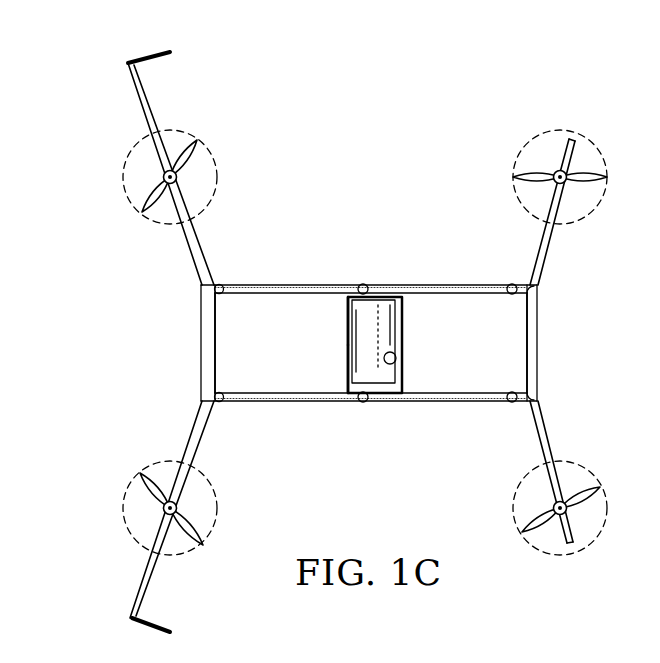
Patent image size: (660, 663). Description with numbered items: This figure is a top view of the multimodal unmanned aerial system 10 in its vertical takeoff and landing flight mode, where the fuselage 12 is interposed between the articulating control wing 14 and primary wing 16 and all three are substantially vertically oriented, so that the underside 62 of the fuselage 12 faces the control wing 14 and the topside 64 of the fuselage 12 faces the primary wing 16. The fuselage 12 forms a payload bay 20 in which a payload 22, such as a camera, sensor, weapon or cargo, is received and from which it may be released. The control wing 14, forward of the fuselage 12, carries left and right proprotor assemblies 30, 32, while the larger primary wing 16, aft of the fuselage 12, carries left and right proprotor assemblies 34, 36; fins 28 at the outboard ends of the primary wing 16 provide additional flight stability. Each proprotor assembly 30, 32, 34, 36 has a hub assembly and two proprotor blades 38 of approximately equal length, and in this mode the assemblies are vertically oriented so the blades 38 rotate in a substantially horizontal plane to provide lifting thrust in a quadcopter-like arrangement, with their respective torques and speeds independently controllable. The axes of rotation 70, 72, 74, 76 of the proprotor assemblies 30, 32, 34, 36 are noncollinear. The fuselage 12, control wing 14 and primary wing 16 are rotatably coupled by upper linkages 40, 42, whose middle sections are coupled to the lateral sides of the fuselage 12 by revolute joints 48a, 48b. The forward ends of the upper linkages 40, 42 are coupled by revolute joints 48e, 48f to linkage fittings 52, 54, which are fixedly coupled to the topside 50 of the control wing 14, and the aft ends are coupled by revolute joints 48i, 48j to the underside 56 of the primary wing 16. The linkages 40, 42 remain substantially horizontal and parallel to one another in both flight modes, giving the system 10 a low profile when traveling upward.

The multimodal unmanned aerial system 10 is at (315, 112).
The fuselage 12 is at (346, 328).
The control wing 14 is at (537, 330).
The primary wing 16 is at (200, 352).
The payload bay 20 is at (396, 360).
The payload 22 is at (392, 335).
The fins 28 is at (152, 56).
The left proprotor assembly 30 is at (568, 172).
The right proprotor assembly 32 is at (590, 532).
The left proprotor assembly 34 is at (160, 175).
The right proprotor assembly 36 is at (160, 508).
The proprotor blades 38 is at (183, 148).
The upper linkage 40 is at (305, 283).
The upper linkage 42 is at (316, 404).
The revolute joint 48a is at (361, 283).
The revolute joint 48b is at (366, 402).
The revolute joint 48e is at (510, 283).
The revolute joint 48f is at (512, 402).
The revolute joint 48i is at (221, 283).
The revolute joint 48j is at (222, 404).
The topside of control wing 50 is at (527, 344).
The linkage fitting 52 is at (536, 284).
The linkage fitting 54 is at (537, 406).
The underside of primary wing 56 is at (217, 338).
The underside of fuselage 62 is at (404, 315).
The topside of fuselage 64 is at (346, 352).
The axis of rotation 70 is at (556, 172).
The axis of rotation 72 is at (540, 540).
The axis of rotation 74 is at (182, 178).
The axis of rotation 76 is at (185, 512).